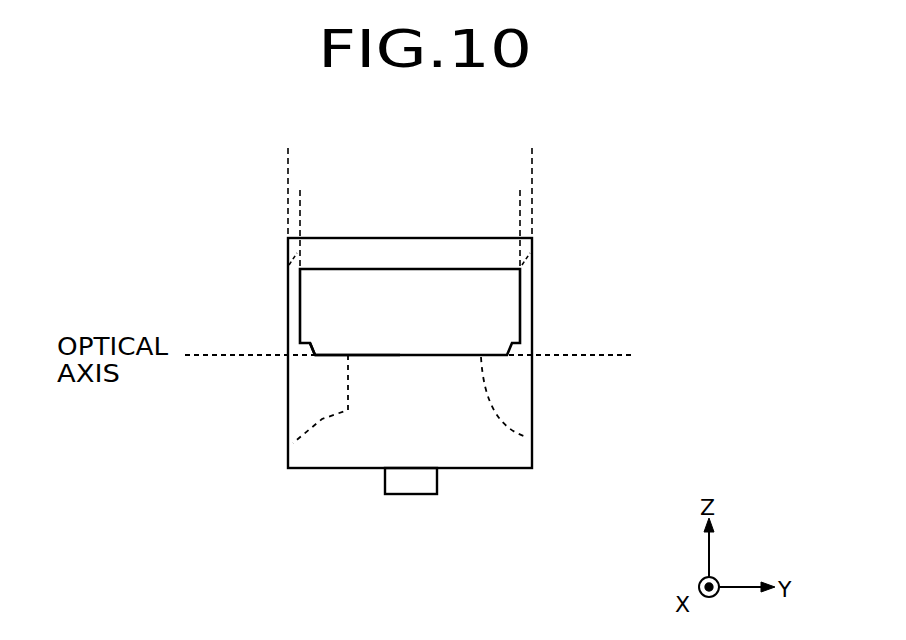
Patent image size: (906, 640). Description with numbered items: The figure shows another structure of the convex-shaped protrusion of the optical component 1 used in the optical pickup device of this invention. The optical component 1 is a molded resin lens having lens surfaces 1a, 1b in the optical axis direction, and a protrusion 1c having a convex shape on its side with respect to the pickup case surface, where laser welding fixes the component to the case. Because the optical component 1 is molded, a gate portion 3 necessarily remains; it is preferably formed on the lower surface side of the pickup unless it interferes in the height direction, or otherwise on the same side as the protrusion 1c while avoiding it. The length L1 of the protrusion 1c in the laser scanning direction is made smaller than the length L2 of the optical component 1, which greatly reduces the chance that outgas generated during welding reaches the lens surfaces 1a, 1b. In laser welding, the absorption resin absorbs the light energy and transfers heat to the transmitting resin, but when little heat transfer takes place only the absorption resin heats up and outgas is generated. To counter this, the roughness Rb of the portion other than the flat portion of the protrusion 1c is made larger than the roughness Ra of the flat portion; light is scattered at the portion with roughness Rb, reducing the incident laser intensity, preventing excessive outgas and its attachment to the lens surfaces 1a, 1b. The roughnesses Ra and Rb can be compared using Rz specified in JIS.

The optical component 1 is at (452, 387).
The lens surface 1a is at (515, 406).
The lens surface 1b is at (322, 410).
The protrusion 1c is at (522, 312).
The gate portion 3 is at (413, 494).
The roughness of the flat portion Ra is at (362, 357).
The roughness of a portion other than the flat portion Rb is at (312, 352).
The length of the protrusion L1 is at (520, 207).
The length of the optical component L2 is at (532, 162).